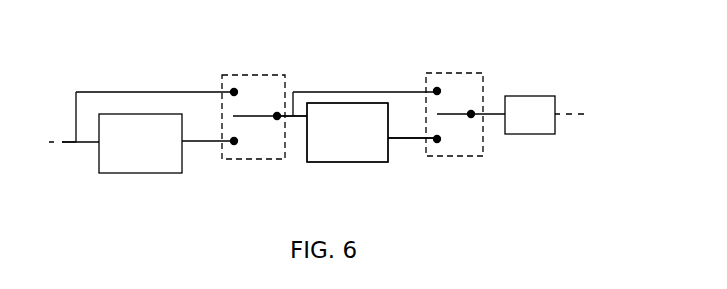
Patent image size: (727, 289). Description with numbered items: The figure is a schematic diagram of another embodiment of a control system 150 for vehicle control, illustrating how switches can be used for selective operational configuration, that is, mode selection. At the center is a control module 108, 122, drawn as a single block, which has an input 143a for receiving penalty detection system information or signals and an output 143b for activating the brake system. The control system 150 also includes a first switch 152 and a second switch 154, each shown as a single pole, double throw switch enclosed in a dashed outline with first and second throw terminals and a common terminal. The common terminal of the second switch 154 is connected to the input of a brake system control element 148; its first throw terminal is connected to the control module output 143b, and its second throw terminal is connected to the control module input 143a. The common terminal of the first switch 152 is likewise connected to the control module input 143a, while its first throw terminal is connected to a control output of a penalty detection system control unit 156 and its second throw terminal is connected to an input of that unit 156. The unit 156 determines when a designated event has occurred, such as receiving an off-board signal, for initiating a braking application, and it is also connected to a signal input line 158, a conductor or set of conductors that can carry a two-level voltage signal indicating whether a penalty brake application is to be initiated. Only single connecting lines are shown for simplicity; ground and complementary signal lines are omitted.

The control system 150 is at (213, 219).
The first switch 152 is at (248, 75).
The second switch 154 is at (452, 73).
The penalty detection system control unit 156 is at (140, 143).
The signal input line 158 is at (68, 143).
The control module 108 is at (347, 132).
The control module 122 is at (347, 132).
The input 143a is at (305, 120).
The output 143b is at (388, 140).
The brake system control element 148 is at (530, 115).